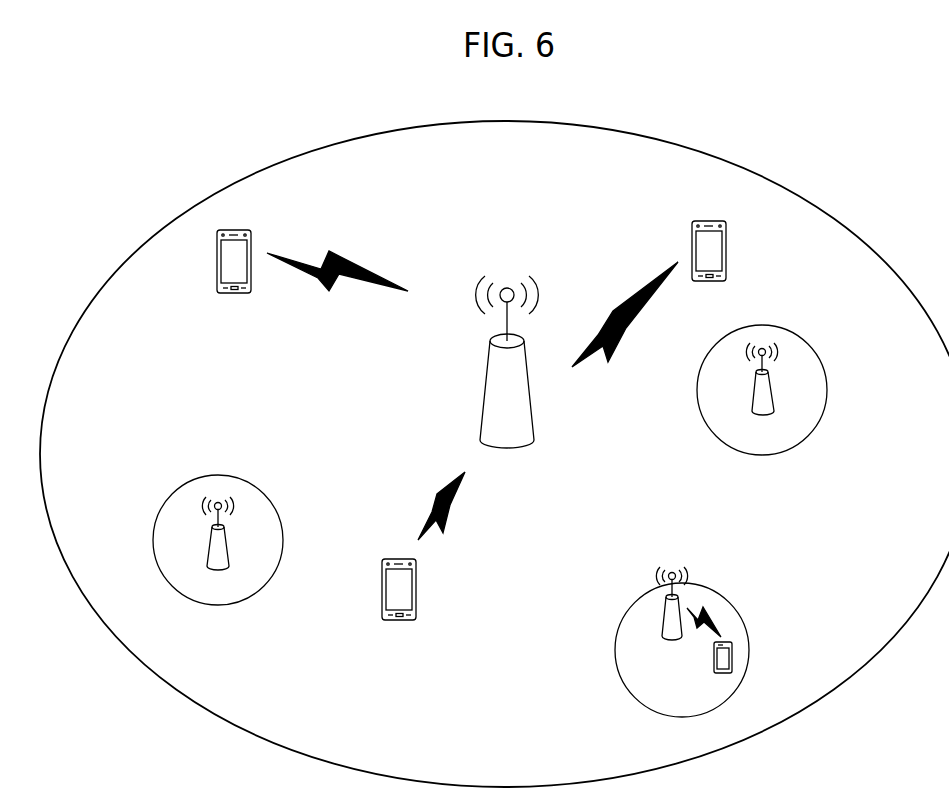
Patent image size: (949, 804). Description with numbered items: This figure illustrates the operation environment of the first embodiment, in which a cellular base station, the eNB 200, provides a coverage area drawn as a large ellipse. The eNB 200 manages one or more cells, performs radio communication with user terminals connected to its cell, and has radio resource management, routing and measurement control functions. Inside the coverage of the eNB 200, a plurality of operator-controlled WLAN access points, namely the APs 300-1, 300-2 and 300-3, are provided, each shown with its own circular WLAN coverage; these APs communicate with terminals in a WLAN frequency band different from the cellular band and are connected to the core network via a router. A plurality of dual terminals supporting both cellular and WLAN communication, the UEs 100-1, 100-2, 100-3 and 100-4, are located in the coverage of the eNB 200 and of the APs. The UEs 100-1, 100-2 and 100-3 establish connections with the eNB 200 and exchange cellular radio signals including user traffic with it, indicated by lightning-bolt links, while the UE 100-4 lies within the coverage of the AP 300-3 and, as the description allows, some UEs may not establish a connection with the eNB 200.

The UE 100-1 is at (251, 248).
The UE 100-2 is at (417, 586).
The UE 100-3 is at (727, 260).
The UE 100-4 is at (733, 658).
The eNB 200 is at (487, 380).
The AP 300-1 is at (229, 548).
The AP 300-2 is at (773, 390).
The AP 300-3 is at (660, 622).